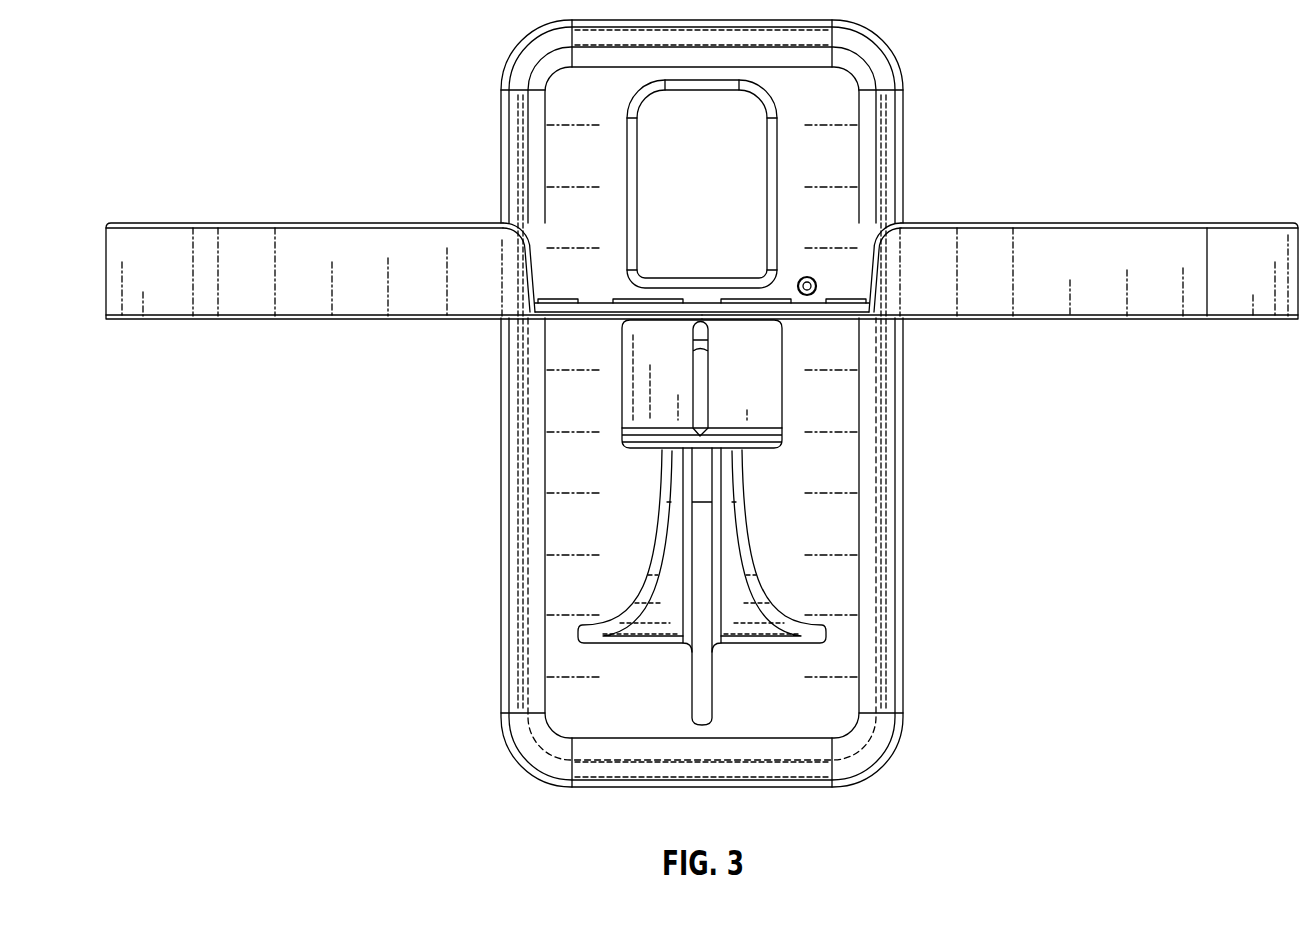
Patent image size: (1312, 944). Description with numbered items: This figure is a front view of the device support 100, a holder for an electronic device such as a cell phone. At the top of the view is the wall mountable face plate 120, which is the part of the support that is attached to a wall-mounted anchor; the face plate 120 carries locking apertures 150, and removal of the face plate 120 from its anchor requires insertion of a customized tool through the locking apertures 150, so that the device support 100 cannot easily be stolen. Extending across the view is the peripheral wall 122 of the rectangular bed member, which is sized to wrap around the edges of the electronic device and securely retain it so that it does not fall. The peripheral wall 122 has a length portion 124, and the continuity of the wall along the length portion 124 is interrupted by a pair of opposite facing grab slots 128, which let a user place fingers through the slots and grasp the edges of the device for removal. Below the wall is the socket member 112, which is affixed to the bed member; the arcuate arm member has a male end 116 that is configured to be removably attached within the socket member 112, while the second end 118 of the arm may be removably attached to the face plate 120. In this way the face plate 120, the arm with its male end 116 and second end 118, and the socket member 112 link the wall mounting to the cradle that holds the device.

The device support 100 is at (1170, 80).
The socket member 112 is at (782, 388).
The male end 116 is at (782, 442).
The second end 118 is at (795, 643).
The wall mountable face plate 120 is at (842, 158).
The peripheral wall 122 is at (1123, 273).
The length portion 124 is at (210, 295).
The grab slots 128 is at (527, 266).
The locking apertures 150 is at (828, 242).